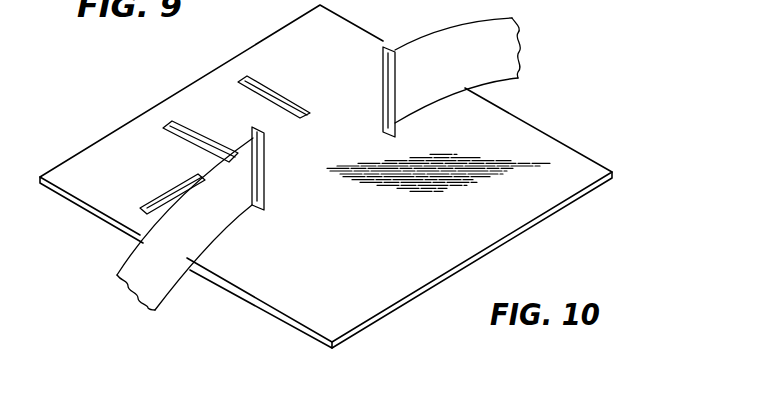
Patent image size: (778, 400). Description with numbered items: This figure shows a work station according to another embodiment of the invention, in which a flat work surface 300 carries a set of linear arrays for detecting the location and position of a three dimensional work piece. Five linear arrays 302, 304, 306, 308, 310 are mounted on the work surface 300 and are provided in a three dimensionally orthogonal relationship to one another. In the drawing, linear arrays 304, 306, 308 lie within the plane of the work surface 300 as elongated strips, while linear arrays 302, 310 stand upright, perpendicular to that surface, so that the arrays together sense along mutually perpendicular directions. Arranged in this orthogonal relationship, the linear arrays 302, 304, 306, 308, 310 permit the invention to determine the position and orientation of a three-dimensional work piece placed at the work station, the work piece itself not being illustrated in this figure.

The base plate 300 is at (233, 58).
The linear array 302 is at (383, 103).
The linear array 304 is at (295, 84).
The linear array 306 is at (175, 135).
The linear array 308 is at (157, 200).
The linear array 310 is at (265, 192).